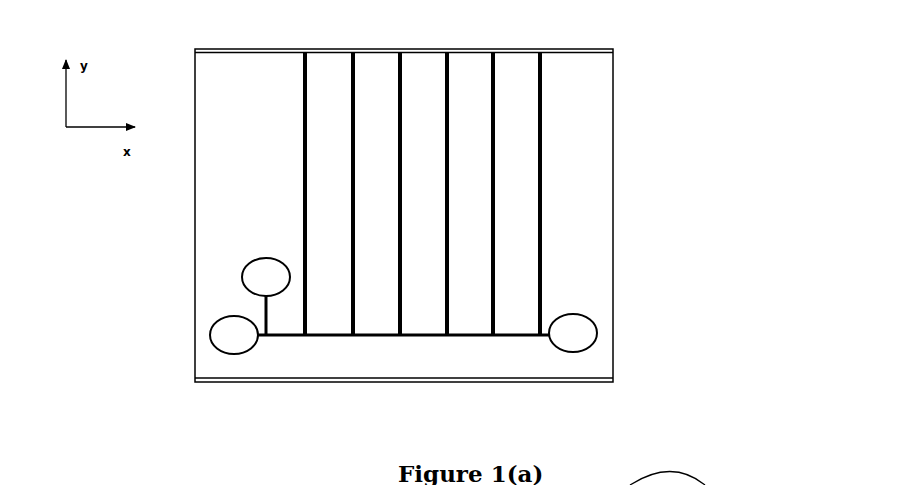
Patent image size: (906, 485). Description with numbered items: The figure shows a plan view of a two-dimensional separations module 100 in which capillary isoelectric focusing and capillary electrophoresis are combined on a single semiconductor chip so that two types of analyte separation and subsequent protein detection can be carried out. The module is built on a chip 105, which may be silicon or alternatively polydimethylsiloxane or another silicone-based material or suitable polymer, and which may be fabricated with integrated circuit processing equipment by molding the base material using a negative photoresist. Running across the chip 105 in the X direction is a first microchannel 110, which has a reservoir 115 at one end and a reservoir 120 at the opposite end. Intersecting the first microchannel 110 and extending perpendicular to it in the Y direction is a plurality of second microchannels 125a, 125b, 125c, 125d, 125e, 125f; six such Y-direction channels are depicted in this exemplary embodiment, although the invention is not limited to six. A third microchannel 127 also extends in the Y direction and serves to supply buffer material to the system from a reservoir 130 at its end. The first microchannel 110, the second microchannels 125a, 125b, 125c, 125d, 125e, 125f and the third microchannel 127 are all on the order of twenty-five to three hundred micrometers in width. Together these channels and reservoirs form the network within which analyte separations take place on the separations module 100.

The two-dimensional separations module 100 is at (672, 78).
The chip 105 is at (585, 195).
The first microchannel 110 is at (327, 342).
The reservoir 115 is at (209, 327).
The reservoir 120 is at (600, 342).
The second microchannel 125a is at (310, 181).
The second microchannel 125b is at (354, 181).
The second microchannel 125c is at (397, 181).
The second microchannel 125d is at (455, 181).
The second microchannel 125e is at (497, 181).
The second microchannel 125f is at (540, 181).
The third microchannel 127 is at (263, 310).
The reservoir 130 is at (265, 252).